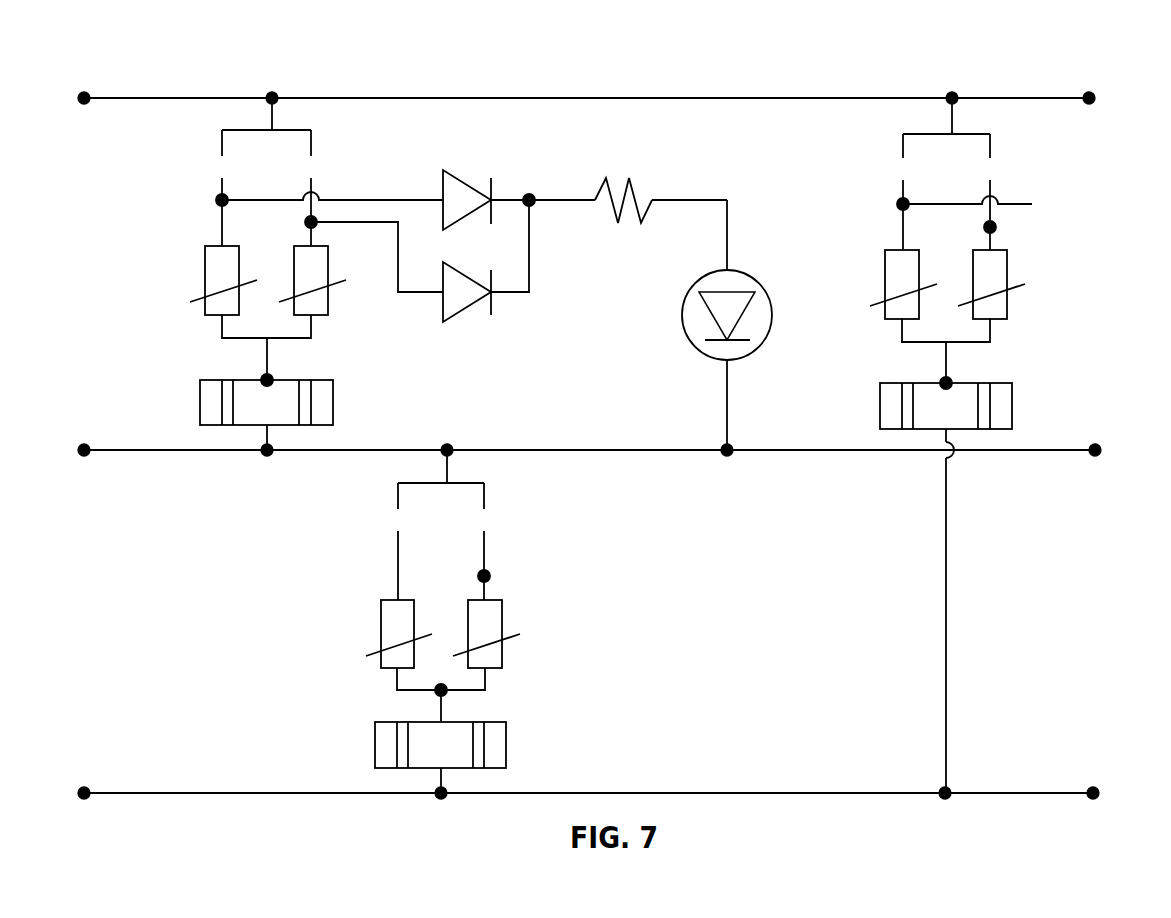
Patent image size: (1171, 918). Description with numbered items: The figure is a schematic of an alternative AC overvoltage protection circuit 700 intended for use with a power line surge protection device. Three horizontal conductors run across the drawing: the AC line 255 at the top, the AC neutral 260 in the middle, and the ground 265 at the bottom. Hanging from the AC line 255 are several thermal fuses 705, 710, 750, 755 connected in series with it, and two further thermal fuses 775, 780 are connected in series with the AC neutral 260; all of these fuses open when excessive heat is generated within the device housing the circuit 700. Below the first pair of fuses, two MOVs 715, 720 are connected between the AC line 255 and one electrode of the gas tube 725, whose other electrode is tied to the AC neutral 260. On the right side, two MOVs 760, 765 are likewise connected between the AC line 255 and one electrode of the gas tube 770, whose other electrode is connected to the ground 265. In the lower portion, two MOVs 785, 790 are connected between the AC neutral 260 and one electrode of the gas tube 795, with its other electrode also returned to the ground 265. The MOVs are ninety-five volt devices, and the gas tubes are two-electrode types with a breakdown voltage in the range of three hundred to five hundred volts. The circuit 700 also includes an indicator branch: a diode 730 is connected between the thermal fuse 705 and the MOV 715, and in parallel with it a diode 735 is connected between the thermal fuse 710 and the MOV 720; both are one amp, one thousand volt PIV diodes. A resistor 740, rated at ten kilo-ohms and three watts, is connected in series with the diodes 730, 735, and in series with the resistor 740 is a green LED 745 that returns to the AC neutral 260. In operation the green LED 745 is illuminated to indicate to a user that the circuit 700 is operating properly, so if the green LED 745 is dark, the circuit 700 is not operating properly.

The AC overvoltage protection circuit 700 is at (820, 90).
The AC line 255 is at (88, 95).
The AC neutral 260 is at (87, 447).
The ground 265 is at (87, 790).
The thermal fuse 705 is at (218, 158).
The thermal fuse 710 is at (318, 158).
The MOV 715 is at (220, 245).
The MOV 720 is at (304, 245).
The gas tube 725 is at (266, 402).
The diode 730 is at (467, 200).
The diode 735 is at (467, 292).
The resistor 740 is at (595, 178).
The green LED 745 is at (748, 272).
The thermal fuse 750 is at (897, 160).
The thermal fuse 755 is at (998, 160).
The MOV 760 is at (901, 248).
The MOV 765 is at (983, 248).
The gas tube 770 is at (946, 406).
The thermal fuse 775 is at (393, 512).
The thermal fuse 780 is at (494, 512).
The MOV 785 is at (397, 598).
The MOV 790 is at (479, 598).
The gas tube 795 is at (440, 745).